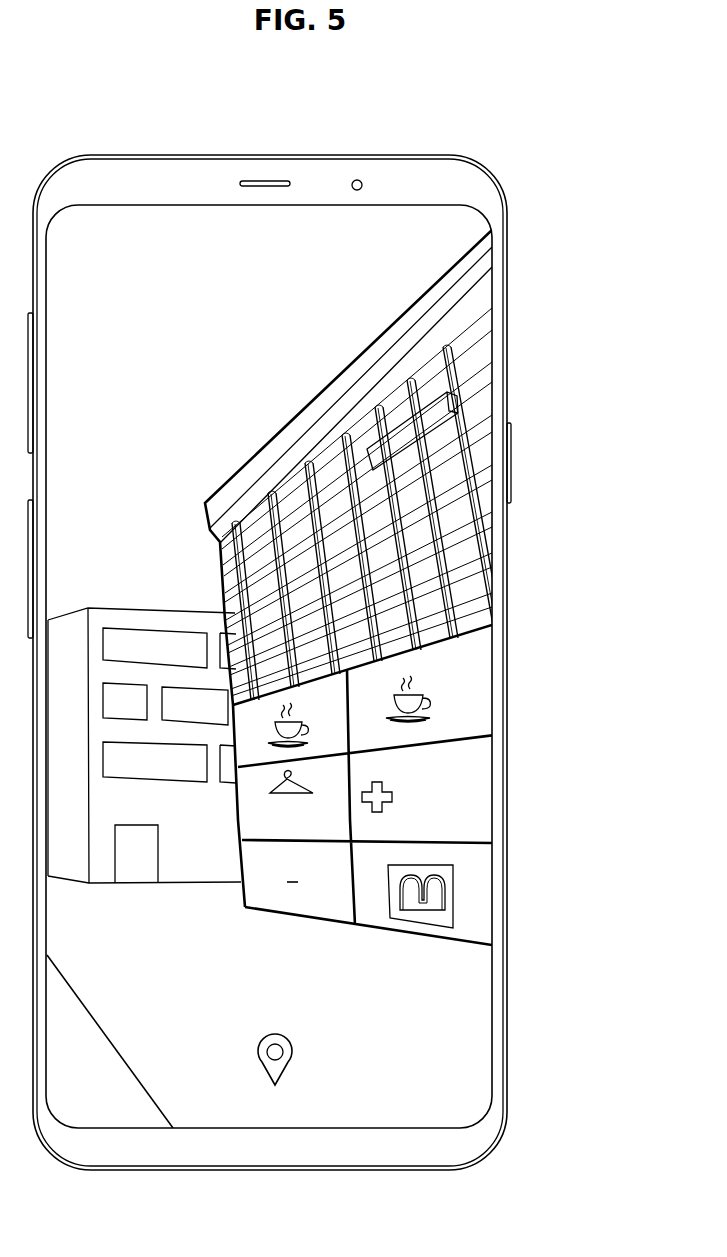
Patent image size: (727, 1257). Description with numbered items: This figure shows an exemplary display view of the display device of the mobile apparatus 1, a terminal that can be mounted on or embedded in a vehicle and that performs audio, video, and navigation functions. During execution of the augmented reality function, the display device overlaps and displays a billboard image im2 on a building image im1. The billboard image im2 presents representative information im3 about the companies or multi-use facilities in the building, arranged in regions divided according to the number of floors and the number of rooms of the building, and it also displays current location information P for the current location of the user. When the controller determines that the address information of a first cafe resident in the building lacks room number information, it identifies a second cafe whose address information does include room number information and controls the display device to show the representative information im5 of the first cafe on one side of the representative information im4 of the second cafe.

The mobile apparatus 1 is at (427, 120).
The building image im1 is at (252, 458).
The billboard image im2 is at (299, 920).
The representative information im3 is at (453, 898).
The representative information of the second cafe im4 is at (437, 695).
The representative information of the first cafe im5 is at (253, 748).
The current location information P is at (290, 1057).